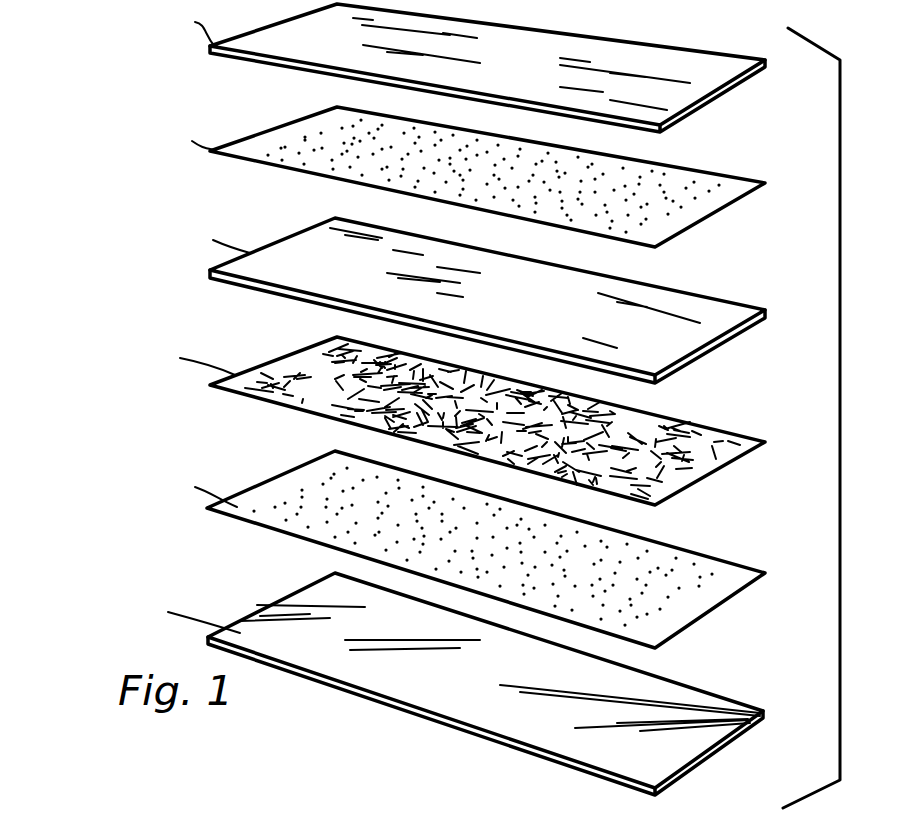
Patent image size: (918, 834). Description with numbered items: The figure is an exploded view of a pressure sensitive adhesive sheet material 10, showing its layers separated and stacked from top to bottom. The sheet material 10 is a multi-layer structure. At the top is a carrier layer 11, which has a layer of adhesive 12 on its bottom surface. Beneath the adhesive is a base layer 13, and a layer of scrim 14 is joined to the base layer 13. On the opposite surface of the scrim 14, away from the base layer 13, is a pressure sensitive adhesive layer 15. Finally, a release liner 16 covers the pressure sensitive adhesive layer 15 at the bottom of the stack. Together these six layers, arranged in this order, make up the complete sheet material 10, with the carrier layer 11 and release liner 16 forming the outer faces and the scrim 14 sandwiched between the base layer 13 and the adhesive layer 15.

The pressure sensitive adhesive sheet material 10 is at (846, 331).
The carrier layer 11 is at (703, 80).
The layer of adhesive 12 is at (712, 202).
The base layer 13 is at (715, 325).
The layer of scrim 14 is at (702, 462).
The pressure sensitive adhesive layer 15 is at (713, 592).
The release liner 16 is at (713, 727).